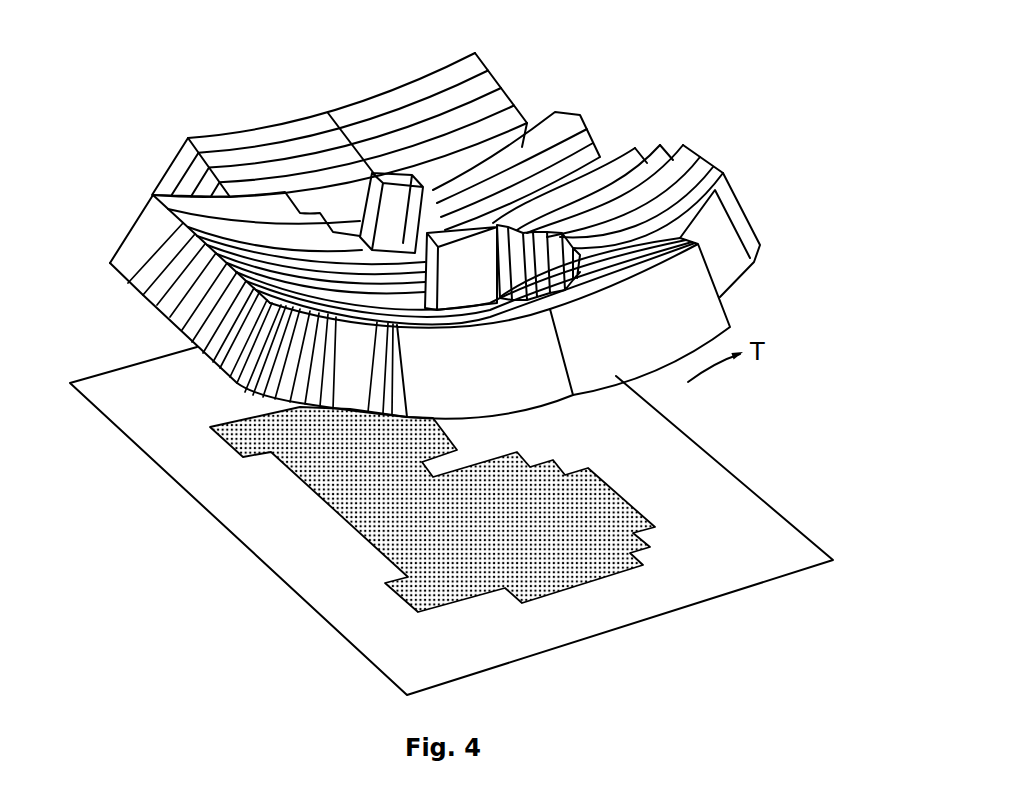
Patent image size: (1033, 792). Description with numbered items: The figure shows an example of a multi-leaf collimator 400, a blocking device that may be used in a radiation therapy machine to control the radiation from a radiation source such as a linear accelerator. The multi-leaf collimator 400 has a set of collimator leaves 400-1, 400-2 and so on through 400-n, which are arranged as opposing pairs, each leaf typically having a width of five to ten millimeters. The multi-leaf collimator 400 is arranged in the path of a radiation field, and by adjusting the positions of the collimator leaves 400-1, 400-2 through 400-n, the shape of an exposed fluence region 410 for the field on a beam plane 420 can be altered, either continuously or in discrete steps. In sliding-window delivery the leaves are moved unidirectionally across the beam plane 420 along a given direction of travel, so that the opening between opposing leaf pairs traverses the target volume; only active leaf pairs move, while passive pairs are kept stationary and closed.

The multi-leaf collimator 400 is at (489, 252).
The collimator leaf 400-1 is at (277, 133).
The collimator leaf 400-2 is at (440, 78).
The collimator leaf 400-n is at (640, 362).
The exposed fluence region 410 is at (388, 521).
The beam plane 420 is at (165, 370).